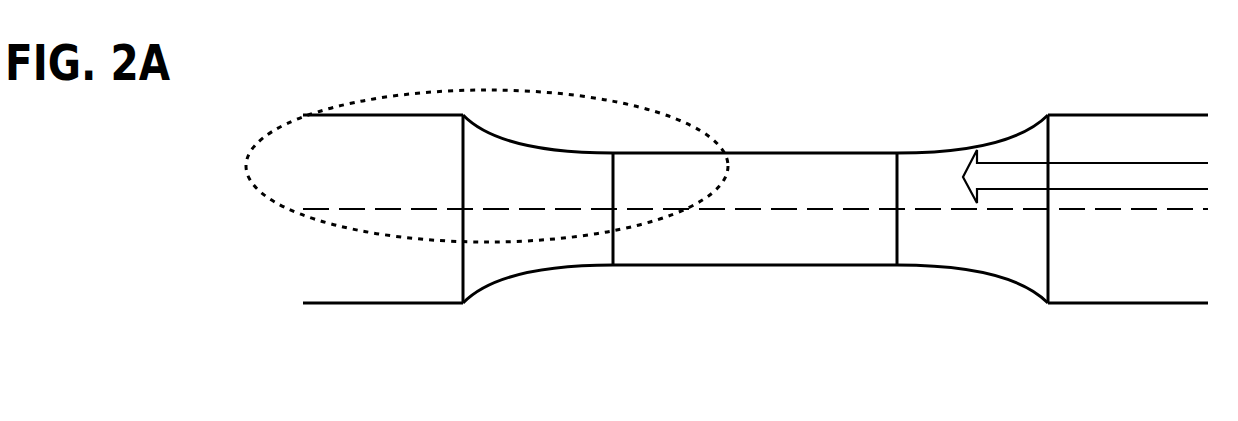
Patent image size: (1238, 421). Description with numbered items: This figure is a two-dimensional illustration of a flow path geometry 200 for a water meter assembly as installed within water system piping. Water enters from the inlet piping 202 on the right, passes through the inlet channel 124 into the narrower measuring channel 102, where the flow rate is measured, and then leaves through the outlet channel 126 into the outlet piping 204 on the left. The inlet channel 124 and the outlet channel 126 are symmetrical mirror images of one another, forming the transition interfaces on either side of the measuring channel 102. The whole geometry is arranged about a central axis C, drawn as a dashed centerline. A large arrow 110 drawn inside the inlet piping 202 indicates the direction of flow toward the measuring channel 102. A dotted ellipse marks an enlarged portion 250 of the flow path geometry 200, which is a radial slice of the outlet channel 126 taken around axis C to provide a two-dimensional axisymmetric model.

The flow path geometry 200 is at (738, 199).
The enlarged portion 250 is at (594, 84).
The outlet piping 204 is at (319, 306).
The outlet channel 126 is at (452, 282).
The measuring channel 102 is at (808, 268).
The inlet channel 124 is at (1060, 279).
The inlet piping 202 is at (1161, 306).
The fluid flow direction 110 is at (1085, 176).